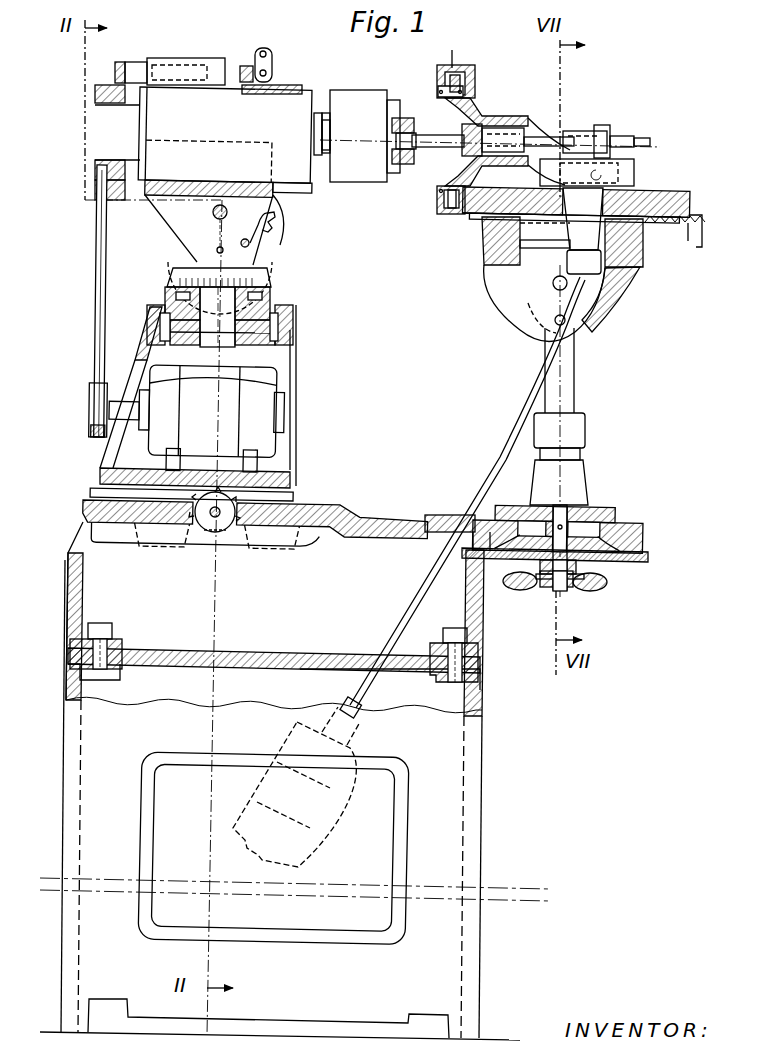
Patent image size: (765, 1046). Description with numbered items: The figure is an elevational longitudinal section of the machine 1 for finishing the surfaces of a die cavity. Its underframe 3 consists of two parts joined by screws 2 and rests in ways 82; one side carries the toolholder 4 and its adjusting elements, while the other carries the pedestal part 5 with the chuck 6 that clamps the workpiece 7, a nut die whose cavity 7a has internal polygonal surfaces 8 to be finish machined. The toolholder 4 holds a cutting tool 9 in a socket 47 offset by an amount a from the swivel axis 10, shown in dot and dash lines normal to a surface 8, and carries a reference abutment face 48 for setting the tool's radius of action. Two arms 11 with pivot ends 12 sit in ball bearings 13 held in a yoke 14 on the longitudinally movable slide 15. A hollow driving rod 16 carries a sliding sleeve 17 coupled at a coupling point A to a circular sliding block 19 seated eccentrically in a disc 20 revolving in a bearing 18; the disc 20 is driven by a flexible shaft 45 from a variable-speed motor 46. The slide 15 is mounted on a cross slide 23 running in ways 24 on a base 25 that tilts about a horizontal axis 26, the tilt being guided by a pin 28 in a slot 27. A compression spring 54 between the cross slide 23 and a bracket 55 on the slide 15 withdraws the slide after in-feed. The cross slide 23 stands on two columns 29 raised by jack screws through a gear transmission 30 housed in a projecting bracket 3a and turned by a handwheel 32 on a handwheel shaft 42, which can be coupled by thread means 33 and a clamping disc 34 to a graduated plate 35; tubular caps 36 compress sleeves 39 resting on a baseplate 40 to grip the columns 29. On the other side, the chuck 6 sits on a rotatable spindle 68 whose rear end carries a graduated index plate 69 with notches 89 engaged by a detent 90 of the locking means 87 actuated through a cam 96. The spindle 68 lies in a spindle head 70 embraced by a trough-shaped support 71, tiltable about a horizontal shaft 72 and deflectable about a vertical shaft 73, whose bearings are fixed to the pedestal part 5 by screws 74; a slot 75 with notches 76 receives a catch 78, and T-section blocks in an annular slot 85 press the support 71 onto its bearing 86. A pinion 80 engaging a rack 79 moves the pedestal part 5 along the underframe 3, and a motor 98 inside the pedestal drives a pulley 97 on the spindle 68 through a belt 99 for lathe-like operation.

The machine 1 is at (572, 768).
The screws 2 is at (104, 640).
The machine underframe 3 is at (448, 838).
The projecting bracket 3a is at (516, 622).
The toolholder 4 is at (490, 102).
The pedestal part 5 is at (105, 476).
The chuck 6 is at (353, 94).
The workpiece 7 is at (405, 165).
The die cavity 7a is at (382, 148).
The internal surfaces 8 is at (397, 110).
The cutting tool 9 is at (430, 136).
The swivel axis 10 is at (458, 60).
The arms 11 is at (470, 116).
The pivot ends 12 is at (465, 80).
The ball bearings 13 is at (440, 86).
The yoke 14 is at (452, 66).
The longitudinally movable slide 15 is at (682, 200).
The driving rod 16 is at (624, 138).
The sliding sleeve 17 is at (586, 132).
The bearing 18 is at (590, 205).
The circular sliding block 19 is at (630, 166).
The disc 20 is at (545, 166).
The cross slide 23 is at (640, 252).
The ways 24 is at (628, 270).
The base 25 is at (616, 296).
The horizontal axis 26 is at (553, 286).
The slot 27 is at (530, 314).
The pin 28 is at (555, 324).
The columns 29 is at (576, 368).
The gear transmission 30 is at (600, 511).
The handwheel 32 is at (596, 589).
The thread means 33 is at (565, 582).
The clamping disc 34 is at (540, 566).
The graduated plate 35 is at (649, 556).
The tubular caps 36 is at (582, 428).
The sleeves 39 is at (576, 480).
The baseplate 40 is at (518, 508).
The handwheel shaft 42 is at (584, 575).
The flexible shaft 45 is at (510, 443).
The motor 46 is at (290, 730).
The socket 47 is at (466, 135).
The reference abutment face 48 is at (450, 158).
The offset a is at (452, 164).
The coupling point A is at (640, 150).
The compression spring 54 is at (686, 241).
The bracket 55 is at (696, 228).
The spindle 68 is at (280, 205).
The graduated index plate 69 is at (118, 70).
The spindle head 70 is at (165, 137).
The trough-shaped support 71 is at (172, 188).
The horizontal shaft 72 is at (214, 215).
The vertical shaft 73 is at (224, 328).
The screws 74 is at (158, 345).
The slot 75 is at (250, 244).
The notches 76 is at (270, 215).
The catch 78 is at (175, 270).
The rack 79 is at (292, 481).
The pinion 80 is at (224, 530).
The ways 82 is at (86, 494).
The annular slot 85 is at (180, 295).
The bearing 86 is at (270, 298).
The locking means 87 is at (212, 60).
The notches 89 is at (112, 190).
The detent 90 is at (128, 70).
The cam 96 is at (274, 63).
The pulley 97 is at (110, 166).
The motor 98 is at (165, 405).
The belt 99 is at (97, 280).